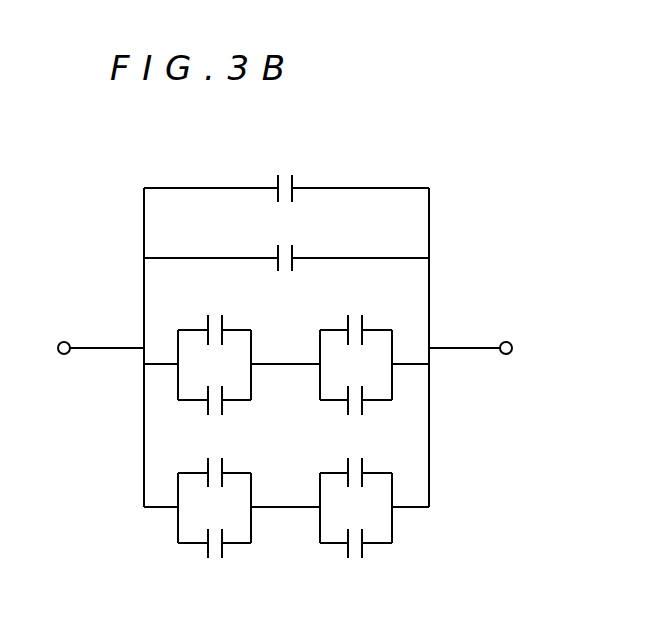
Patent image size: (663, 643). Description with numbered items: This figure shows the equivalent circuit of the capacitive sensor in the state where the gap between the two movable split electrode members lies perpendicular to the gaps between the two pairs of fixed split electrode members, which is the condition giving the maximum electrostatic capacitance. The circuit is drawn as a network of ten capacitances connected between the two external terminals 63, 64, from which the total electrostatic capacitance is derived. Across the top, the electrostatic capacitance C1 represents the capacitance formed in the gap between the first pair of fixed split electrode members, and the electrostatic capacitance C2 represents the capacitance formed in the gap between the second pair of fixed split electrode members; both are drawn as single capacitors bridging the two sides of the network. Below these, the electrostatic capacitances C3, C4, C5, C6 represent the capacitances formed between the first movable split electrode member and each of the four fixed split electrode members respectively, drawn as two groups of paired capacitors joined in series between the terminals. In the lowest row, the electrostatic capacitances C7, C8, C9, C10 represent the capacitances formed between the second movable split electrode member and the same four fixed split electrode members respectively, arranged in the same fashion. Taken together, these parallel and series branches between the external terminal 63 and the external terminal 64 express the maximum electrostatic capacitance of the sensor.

The external terminal 63 is at (64, 341).
The external terminal 64 is at (507, 341).
The electrostatic capacitance C1 is at (286, 168).
The electrostatic capacitance C2 is at (286, 239).
The electrostatic capacitance C3 is at (214, 311).
The electrostatic capacitance C4 is at (214, 382).
The electrostatic capacitance C5 is at (356, 311).
The electrostatic capacitance C6 is at (356, 382).
The electrostatic capacitance C7 is at (214, 454).
The electrostatic capacitance C8 is at (214, 559).
The electrostatic capacitance C9 is at (356, 454).
The electrostatic capacitance C10 is at (356, 559).